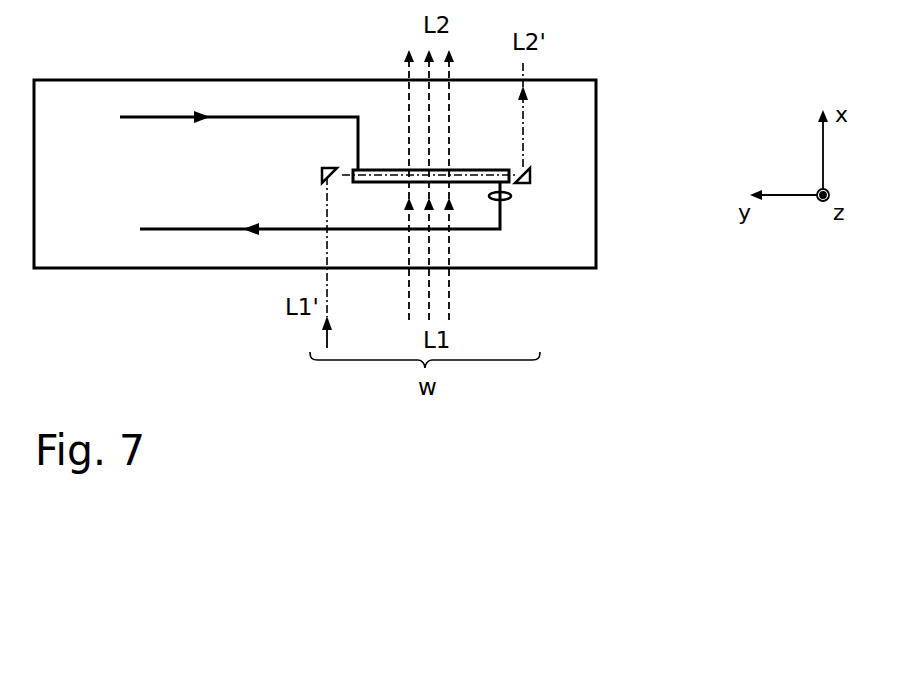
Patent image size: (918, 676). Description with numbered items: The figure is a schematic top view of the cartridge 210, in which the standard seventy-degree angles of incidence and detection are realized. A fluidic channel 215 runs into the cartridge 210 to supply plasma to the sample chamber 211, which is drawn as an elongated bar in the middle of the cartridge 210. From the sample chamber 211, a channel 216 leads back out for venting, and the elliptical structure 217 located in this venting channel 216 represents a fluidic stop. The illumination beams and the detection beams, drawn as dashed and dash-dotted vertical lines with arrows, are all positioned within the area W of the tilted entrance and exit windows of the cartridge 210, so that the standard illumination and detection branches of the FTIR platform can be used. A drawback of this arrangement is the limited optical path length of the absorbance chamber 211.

The cartridge 210 is at (596, 112).
The sample chamber 211 is at (506, 168).
The fluidic channel 215 is at (148, 117).
The venting channel 216 is at (187, 229).
The elliptical structure 217 is at (511, 196).